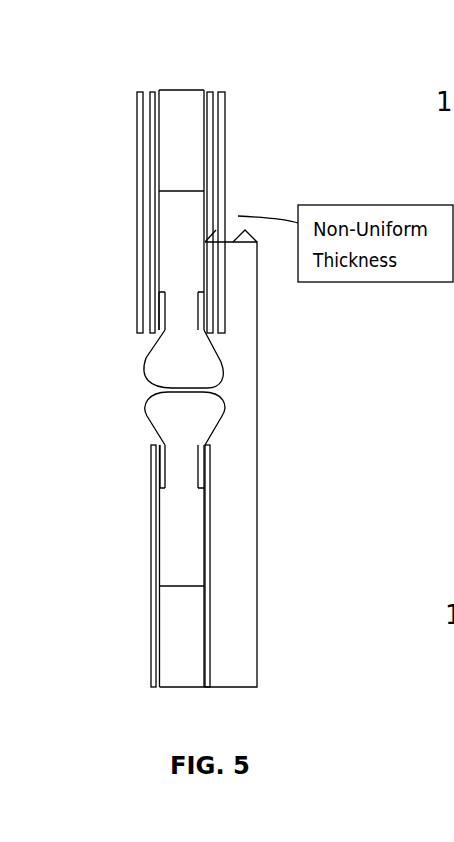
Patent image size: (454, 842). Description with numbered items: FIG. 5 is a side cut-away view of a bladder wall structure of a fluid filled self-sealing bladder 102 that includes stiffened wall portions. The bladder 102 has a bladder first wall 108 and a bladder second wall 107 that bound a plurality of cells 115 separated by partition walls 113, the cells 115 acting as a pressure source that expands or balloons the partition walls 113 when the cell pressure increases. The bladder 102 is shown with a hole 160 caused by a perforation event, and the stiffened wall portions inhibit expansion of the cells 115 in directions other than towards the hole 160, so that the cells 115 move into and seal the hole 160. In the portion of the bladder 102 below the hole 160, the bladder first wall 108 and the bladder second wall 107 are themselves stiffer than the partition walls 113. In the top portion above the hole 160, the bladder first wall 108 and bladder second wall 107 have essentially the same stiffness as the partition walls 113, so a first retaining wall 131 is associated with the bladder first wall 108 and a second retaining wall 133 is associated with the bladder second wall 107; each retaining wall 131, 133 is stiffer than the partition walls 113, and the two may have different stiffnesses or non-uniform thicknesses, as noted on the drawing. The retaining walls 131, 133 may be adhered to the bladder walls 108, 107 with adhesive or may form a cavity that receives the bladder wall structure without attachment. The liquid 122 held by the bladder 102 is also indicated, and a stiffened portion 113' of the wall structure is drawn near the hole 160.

The self-sealing bladder 102 is at (182, 110).
The bladder second wall 107 is at (147, 111).
The bladder first wall 108 is at (210, 113).
The partition walls 113 is at (191, 390).
The non-uniform thickness membrane portion 113' is at (255, 390).
The cells 115 is at (179, 438).
The liquid 122 is at (235, 528).
The first retaining wall 131 is at (226, 142).
The second retaining wall 133 is at (135, 171).
The hole 160 is at (144, 386).